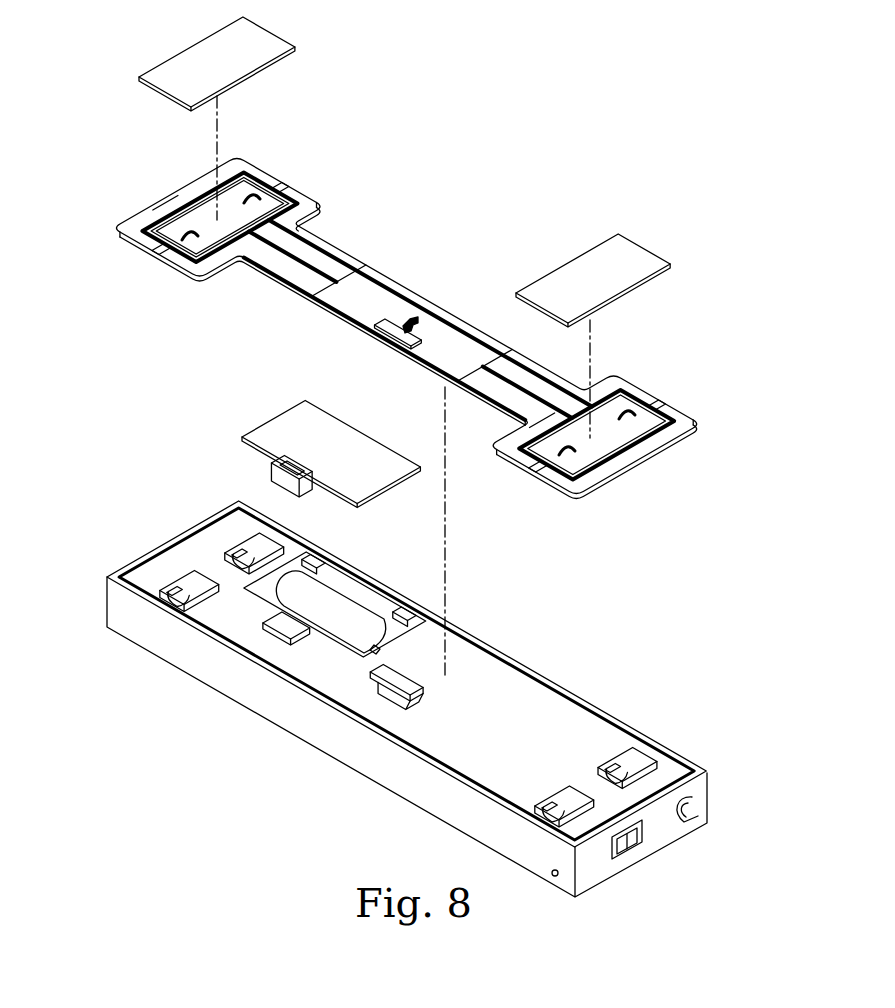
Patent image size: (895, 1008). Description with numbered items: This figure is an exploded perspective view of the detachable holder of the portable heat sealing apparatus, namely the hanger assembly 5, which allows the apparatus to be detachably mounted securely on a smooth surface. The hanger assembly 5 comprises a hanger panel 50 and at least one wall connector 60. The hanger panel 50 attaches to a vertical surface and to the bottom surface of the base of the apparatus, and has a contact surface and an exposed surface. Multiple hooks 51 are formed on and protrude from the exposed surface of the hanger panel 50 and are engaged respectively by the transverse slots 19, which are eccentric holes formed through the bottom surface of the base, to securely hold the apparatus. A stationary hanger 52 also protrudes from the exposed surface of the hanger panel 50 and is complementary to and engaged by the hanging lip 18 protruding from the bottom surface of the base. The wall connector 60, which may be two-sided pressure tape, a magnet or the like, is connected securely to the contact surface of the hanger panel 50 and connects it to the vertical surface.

The hanger assembly 5 is at (492, 457).
The hanging lip 18 is at (379, 697).
The transverse slots 19 is at (643, 753).
The hanger panel 50 is at (695, 415).
The hooks 51 is at (258, 197).
The stationary hanger 52 is at (405, 332).
The wall connector 60 is at (638, 240).